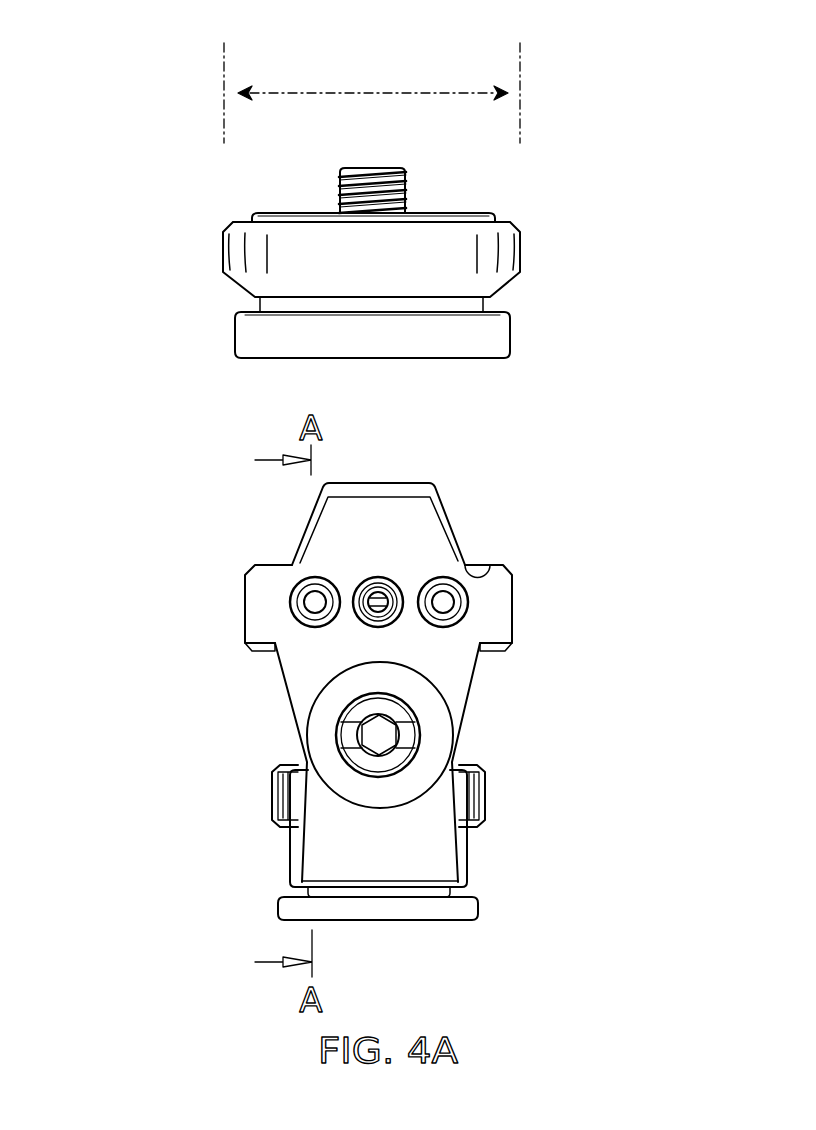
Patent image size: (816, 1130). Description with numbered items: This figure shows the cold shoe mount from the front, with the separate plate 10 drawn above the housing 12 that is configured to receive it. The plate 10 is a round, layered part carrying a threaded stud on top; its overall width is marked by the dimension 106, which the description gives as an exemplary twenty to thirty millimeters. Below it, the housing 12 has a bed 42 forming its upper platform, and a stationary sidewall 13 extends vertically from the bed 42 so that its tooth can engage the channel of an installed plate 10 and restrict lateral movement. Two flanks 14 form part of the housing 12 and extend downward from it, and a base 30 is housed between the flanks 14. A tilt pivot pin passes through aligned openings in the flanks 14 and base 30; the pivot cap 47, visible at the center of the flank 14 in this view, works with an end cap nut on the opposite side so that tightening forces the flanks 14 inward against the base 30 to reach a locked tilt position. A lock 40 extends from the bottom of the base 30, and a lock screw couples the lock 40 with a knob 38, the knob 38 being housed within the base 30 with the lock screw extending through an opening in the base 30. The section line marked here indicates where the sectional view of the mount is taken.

The plate diameter 106 is at (310, 92).
The plate 10 is at (212, 250).
The housing 12 is at (538, 597).
The stationary sidewall 13 is at (357, 523).
The bed 42 is at (265, 593).
The flanks 14 is at (452, 692).
The pivot cap 47 is at (375, 718).
The knob 38 is at (480, 772).
The base 30 is at (343, 843).
The lock 40 is at (455, 908).